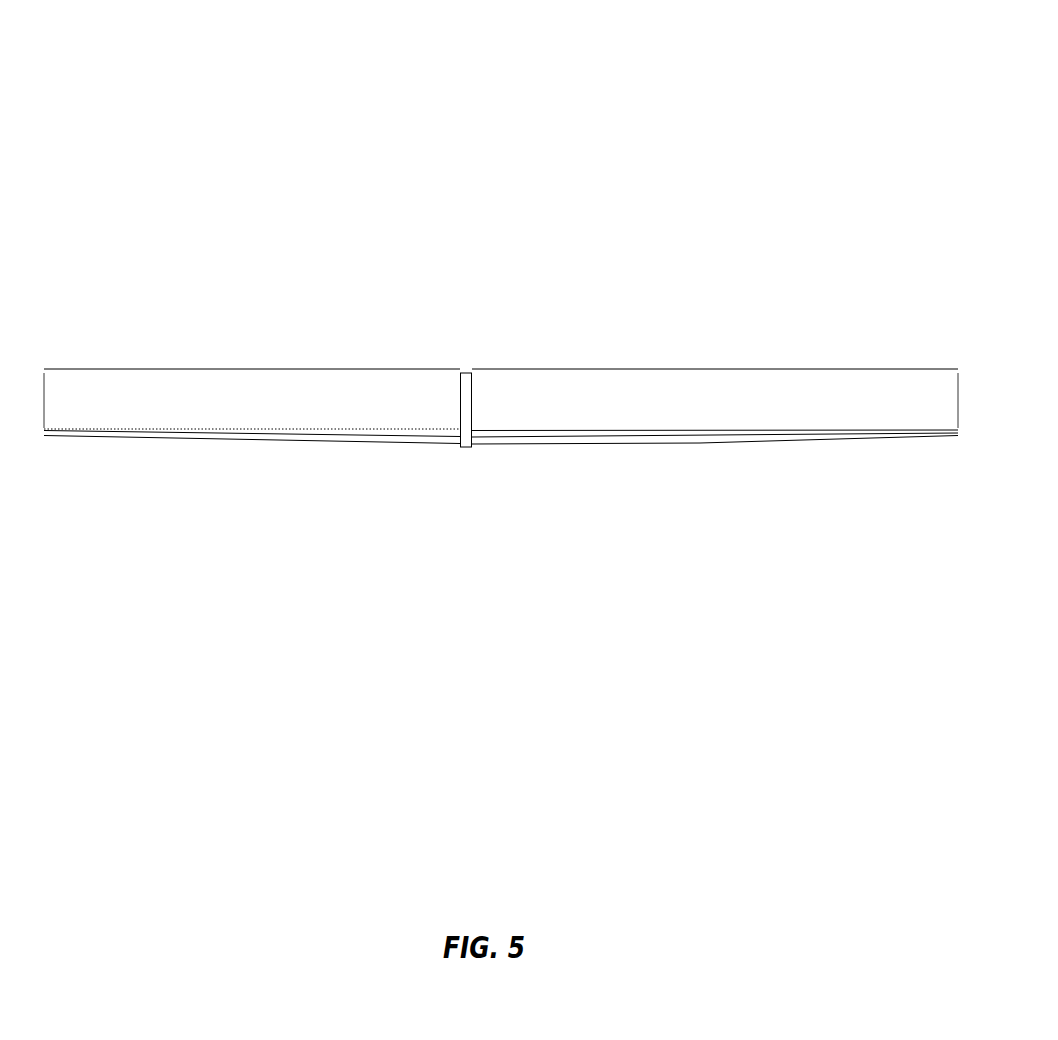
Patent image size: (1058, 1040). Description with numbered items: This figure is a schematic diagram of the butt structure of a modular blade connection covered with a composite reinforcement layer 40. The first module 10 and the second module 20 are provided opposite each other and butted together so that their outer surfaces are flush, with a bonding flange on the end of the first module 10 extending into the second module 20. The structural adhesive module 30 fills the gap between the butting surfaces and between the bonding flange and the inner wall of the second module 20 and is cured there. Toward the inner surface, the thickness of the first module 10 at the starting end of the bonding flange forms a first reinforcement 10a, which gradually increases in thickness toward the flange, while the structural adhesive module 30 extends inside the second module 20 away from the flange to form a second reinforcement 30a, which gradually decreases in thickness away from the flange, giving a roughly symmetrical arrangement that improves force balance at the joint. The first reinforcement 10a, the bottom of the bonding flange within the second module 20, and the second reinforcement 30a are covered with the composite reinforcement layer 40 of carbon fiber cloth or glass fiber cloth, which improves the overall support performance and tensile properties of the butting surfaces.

The first module 10 is at (248, 380).
The first reinforcement 10a is at (443, 442).
The second module 20 is at (695, 382).
The structural adhesive module 30 is at (467, 373).
The second reinforcement 30a is at (737, 437).
The adhesive layer 40 is at (568, 446).